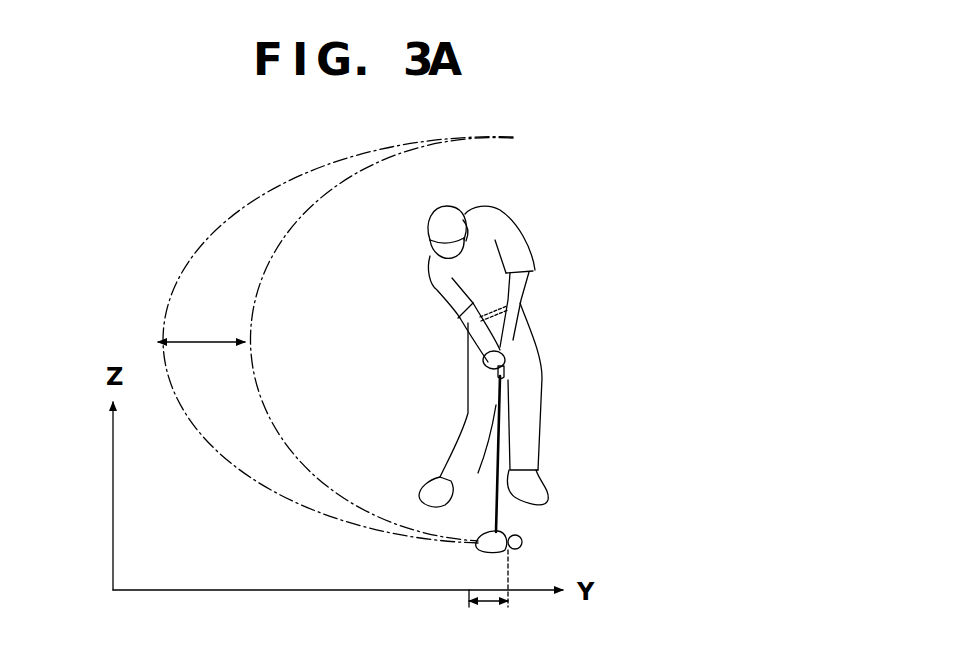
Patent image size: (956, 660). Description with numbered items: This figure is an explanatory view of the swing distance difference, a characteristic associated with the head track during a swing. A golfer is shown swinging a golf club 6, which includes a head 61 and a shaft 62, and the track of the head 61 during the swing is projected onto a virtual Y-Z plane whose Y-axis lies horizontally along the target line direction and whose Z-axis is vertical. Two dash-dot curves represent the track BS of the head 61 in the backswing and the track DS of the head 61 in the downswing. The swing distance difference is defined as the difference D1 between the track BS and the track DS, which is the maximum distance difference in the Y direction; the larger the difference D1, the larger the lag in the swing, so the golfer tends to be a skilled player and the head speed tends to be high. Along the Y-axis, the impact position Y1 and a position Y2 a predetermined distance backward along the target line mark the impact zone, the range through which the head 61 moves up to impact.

The golf club 6 is at (508, 379).
The head 61 is at (488, 530).
The shaft 62 is at (498, 446).
The track of the head in a backswing BS is at (210, 230).
The track of the head in a downswing DS is at (272, 247).
The difference D1 is at (201, 326).
The impact position Y1 is at (517, 594).
The position backward along the target line Y2 is at (480, 614).